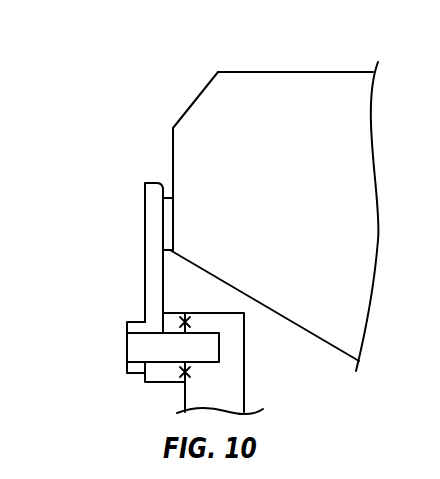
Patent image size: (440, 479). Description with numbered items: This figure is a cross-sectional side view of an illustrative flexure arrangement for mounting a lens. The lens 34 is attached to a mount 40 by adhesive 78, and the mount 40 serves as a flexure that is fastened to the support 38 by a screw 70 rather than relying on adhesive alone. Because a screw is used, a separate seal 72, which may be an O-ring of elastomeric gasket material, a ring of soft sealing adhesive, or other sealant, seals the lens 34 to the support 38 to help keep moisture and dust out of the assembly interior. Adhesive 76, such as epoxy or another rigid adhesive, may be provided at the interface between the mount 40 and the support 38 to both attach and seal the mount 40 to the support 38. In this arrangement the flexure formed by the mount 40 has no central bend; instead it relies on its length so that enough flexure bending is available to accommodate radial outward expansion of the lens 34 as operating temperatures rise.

The lens 34 is at (293, 82).
The support 38 is at (244, 378).
The mount 40 is at (143, 250).
The screw 70 is at (127, 348).
The seal 72 is at (182, 322).
The adhesive 76 is at (190, 377).
The adhesive 78 is at (169, 197).